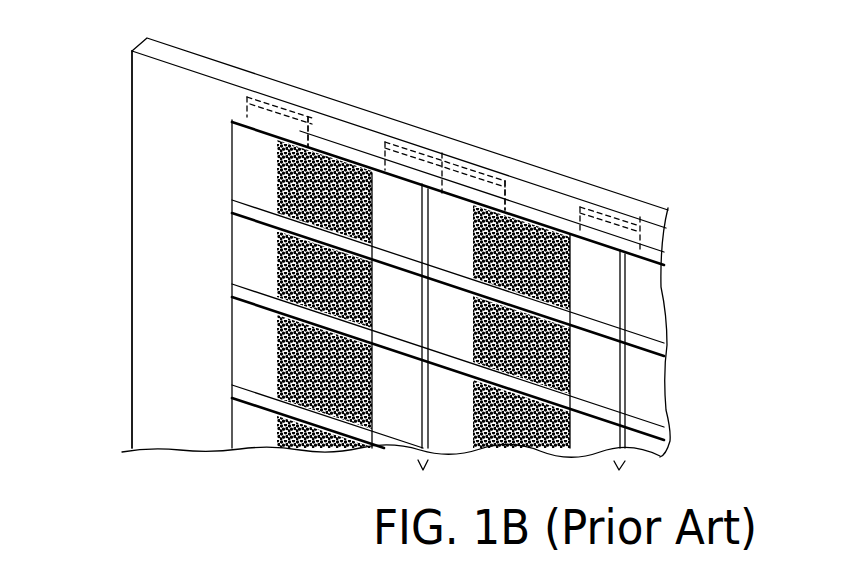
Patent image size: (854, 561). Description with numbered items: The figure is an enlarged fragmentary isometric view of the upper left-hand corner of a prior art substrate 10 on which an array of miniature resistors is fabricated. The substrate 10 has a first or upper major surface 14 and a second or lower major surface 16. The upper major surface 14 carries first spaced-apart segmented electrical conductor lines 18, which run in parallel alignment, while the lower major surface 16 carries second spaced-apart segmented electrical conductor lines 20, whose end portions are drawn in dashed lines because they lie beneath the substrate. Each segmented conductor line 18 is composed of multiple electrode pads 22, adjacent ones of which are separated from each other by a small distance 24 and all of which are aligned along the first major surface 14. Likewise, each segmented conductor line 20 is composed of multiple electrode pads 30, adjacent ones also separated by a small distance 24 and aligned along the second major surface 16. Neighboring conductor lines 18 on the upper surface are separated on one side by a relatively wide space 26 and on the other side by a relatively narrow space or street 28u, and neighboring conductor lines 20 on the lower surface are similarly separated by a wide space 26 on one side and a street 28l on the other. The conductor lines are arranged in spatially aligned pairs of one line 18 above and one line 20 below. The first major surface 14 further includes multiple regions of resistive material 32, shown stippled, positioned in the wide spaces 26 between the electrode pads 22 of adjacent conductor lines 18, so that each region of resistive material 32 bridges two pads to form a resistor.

The substrate 10 is at (145, 42).
The first major surface 14 is at (157, 105).
The second major surface 16 is at (211, 55).
The first segmented electrical conductor lines 18 is at (238, 143).
The second segmented electrical conductor lines 20 is at (277, 90).
The electrode pads 22 is at (270, 274).
The small distance 24 is at (225, 307).
The relatively wide space 26 is at (335, 140).
The street 28l is at (447, 140).
The relatively narrow space or street 28u is at (423, 470).
The electrode pads 30 is at (305, 92).
The regions of resistive material 32 is at (288, 190).